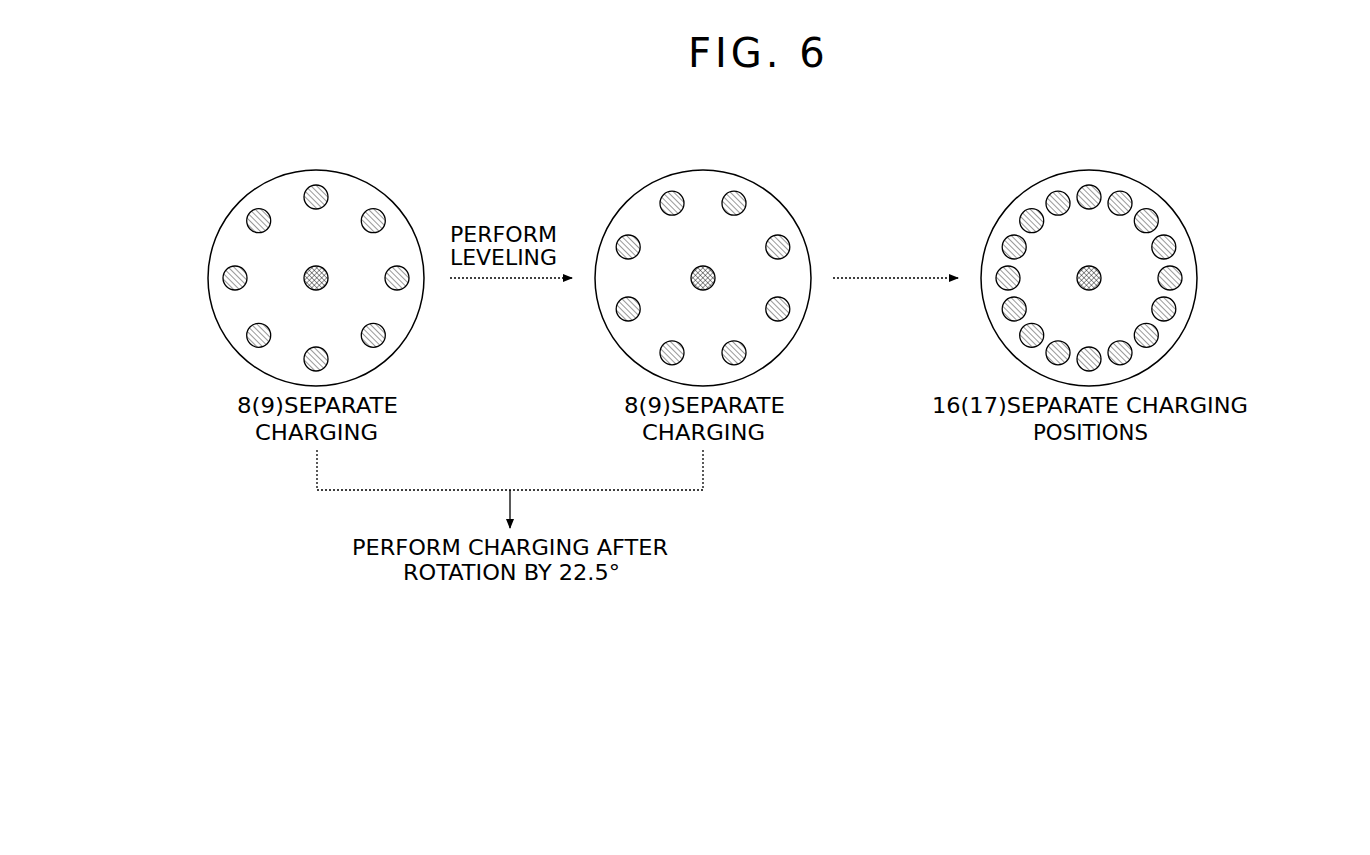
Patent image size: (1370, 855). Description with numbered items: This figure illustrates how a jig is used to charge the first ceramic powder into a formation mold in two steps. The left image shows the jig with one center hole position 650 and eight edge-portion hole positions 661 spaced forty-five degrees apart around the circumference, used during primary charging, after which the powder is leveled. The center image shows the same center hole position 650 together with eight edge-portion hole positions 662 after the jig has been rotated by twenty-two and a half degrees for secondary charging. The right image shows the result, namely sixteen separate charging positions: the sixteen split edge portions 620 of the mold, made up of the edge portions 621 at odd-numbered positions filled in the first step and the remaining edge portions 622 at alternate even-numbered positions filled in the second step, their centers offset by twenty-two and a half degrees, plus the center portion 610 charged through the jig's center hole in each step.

The center portion 610 is at (1085, 265).
The split edge portions 620 is at (1157, 278).
The edge portions 621 is at (1182, 282).
The edge portions 622 is at (1176, 245).
The center hole position 650 is at (310, 267).
The edge-portion hole positions 661 is at (307, 185).
The edge-portion hole positions 662 is at (737, 190).